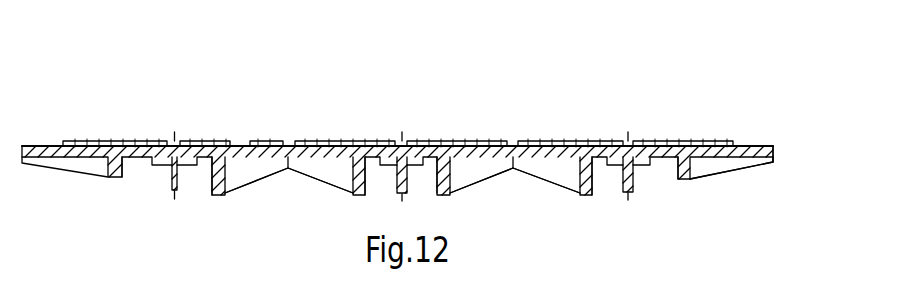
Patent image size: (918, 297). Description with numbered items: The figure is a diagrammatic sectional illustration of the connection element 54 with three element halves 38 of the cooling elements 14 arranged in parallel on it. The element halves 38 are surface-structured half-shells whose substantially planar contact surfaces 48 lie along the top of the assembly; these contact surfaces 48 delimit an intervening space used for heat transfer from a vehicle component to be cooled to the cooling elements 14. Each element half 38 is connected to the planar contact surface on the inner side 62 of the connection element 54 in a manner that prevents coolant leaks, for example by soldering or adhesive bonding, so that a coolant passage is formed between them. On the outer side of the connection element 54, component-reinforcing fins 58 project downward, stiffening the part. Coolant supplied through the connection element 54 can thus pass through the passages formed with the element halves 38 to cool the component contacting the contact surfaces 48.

The cooling element 14 is at (98, 138).
The element half 38 is at (83, 138).
The contact surface 48 is at (450, 140).
The connection element 54 is at (753, 162).
The component-reinforcing fins 58 is at (338, 173).
The inner side 62 is at (758, 142).